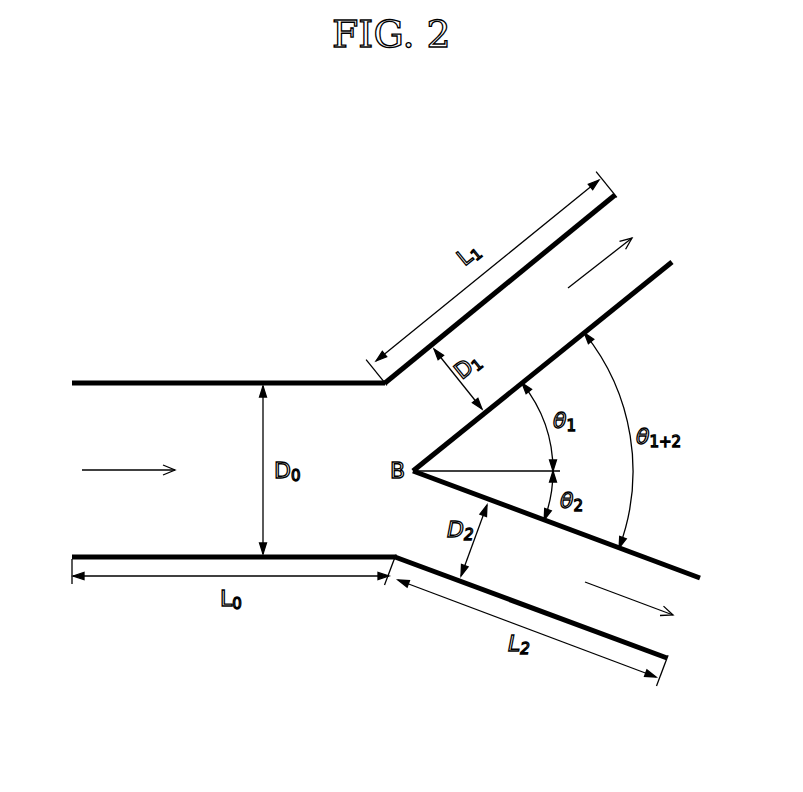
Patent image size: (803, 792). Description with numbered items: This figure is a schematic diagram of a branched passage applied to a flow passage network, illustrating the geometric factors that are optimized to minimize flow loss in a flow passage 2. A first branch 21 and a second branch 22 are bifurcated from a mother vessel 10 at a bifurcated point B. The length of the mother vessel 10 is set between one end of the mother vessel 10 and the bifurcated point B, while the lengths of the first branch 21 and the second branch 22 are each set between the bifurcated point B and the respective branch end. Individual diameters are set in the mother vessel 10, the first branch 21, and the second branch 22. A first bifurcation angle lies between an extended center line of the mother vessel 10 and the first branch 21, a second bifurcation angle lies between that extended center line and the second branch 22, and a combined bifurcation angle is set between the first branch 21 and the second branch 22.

The flow passage 2 is at (320, 258).
The mother vessel 10 is at (163, 401).
The first branch 21 is at (615, 286).
The second branch 22 is at (657, 579).